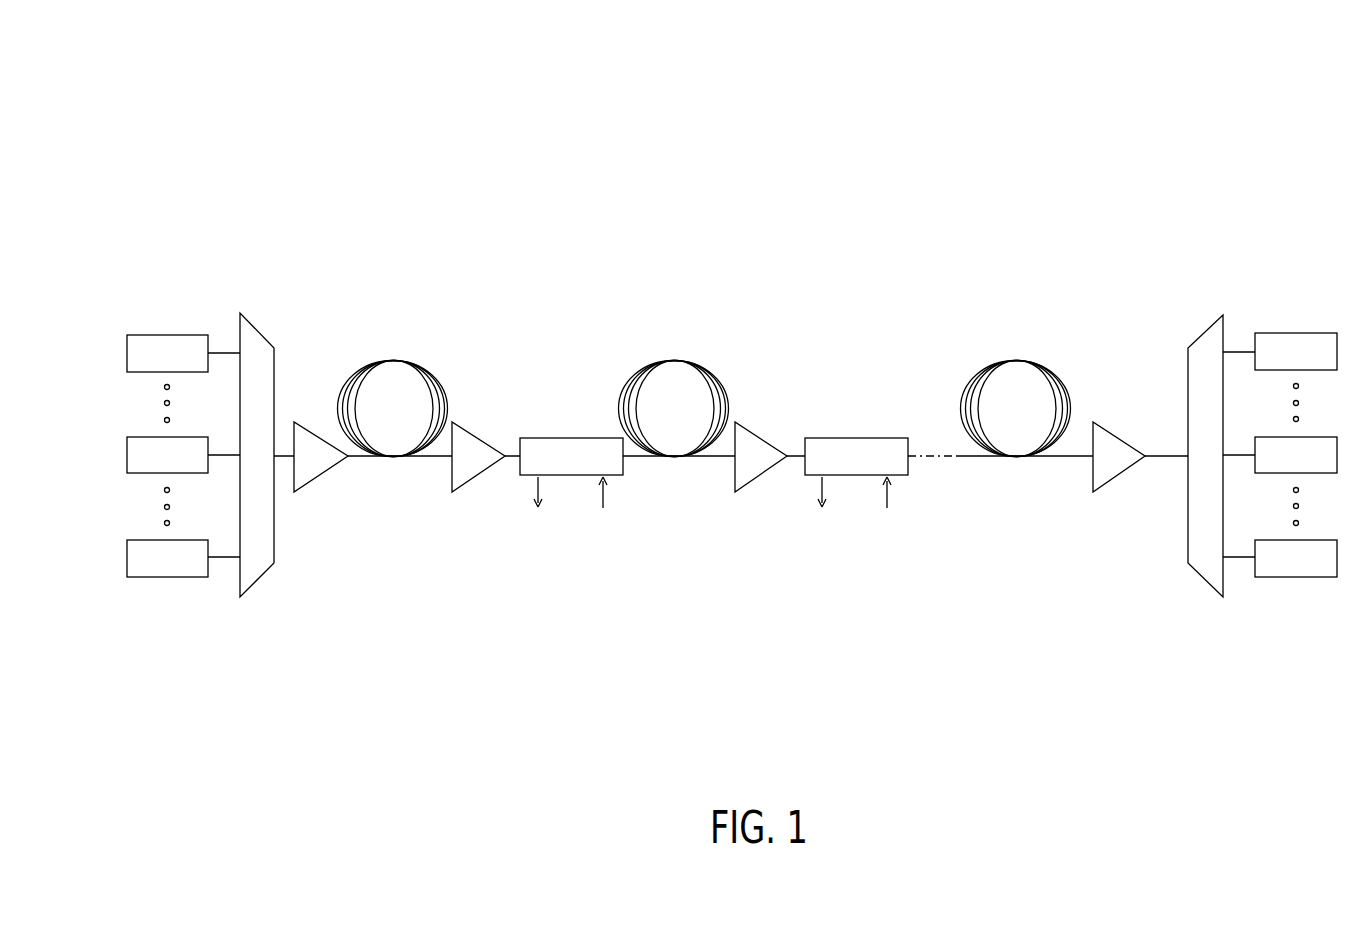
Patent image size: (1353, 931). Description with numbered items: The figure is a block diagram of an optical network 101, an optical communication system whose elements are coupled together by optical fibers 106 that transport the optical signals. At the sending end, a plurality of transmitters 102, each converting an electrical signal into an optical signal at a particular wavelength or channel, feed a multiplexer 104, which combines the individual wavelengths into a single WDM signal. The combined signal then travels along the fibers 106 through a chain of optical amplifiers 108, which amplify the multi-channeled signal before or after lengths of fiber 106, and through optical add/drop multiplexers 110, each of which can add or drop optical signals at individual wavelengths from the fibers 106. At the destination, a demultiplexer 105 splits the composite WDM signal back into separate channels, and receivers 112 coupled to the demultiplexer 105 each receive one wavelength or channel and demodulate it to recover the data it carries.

The optical network 101 is at (212, 88).
The transmitter 102 is at (152, 333).
The multiplexer 104 is at (257, 327).
The demultiplexer 105 is at (1216, 324).
The optical fiber 106 is at (386, 359).
The optical amplifier 108 is at (316, 470).
The optical add/drop multiplexer 110 is at (558, 437).
The receiver 112 is at (1310, 332).